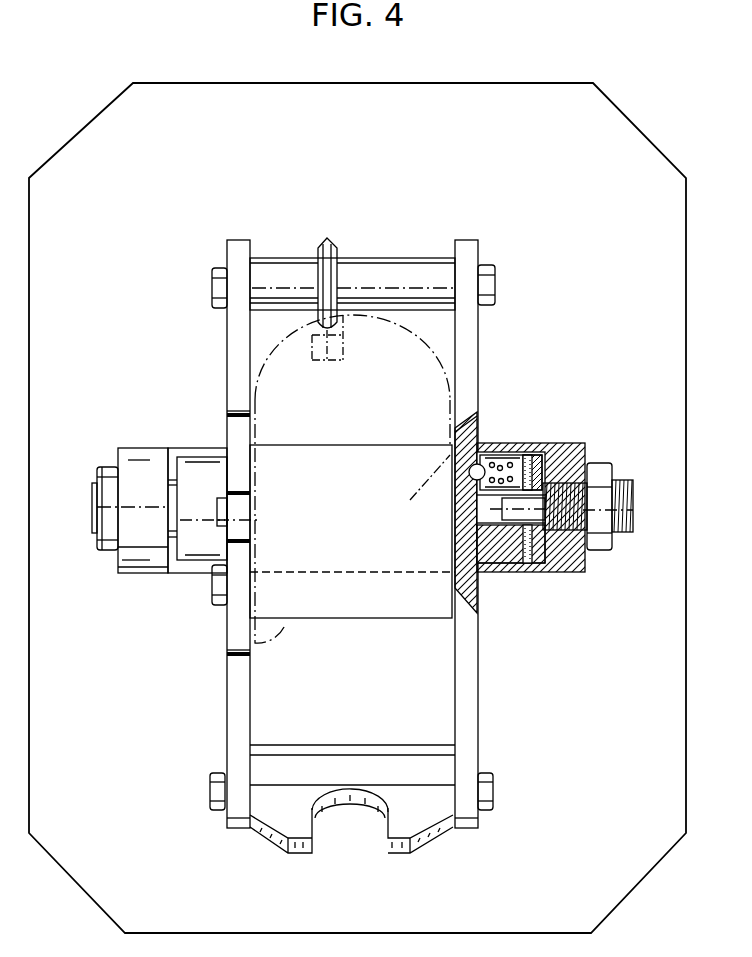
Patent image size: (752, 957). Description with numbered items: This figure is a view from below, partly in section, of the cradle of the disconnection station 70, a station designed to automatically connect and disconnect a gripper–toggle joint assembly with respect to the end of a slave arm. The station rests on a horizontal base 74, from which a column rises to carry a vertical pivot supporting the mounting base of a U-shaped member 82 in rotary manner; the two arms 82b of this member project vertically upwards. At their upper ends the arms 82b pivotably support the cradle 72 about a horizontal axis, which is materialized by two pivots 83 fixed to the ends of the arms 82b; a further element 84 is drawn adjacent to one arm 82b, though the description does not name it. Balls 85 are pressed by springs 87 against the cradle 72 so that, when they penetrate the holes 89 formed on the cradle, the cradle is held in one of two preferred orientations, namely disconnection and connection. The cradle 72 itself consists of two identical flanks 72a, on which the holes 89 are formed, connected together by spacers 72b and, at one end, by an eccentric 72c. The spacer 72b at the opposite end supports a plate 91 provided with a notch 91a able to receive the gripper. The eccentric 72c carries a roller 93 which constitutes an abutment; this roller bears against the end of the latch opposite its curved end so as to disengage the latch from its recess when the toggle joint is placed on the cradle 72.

The disconnection station 70 is at (535, 83).
The base 74 is at (227, 100).
The cradle 72 is at (478, 353).
The flanks 72a is at (232, 673).
The spacers 72b is at (270, 763).
The eccentric 72c is at (418, 260).
The U-shaped member 82 is at (210, 445).
The arms 82b is at (150, 460).
The pivots 83 is at (518, 543).
The nut 84 is at (237, 515).
The balls 85 is at (518, 458).
The springs 87 is at (537, 455).
The holes 89 is at (487, 458).
The plate 91 is at (265, 837).
The notch 91a is at (323, 815).
The roller 93 is at (330, 241).